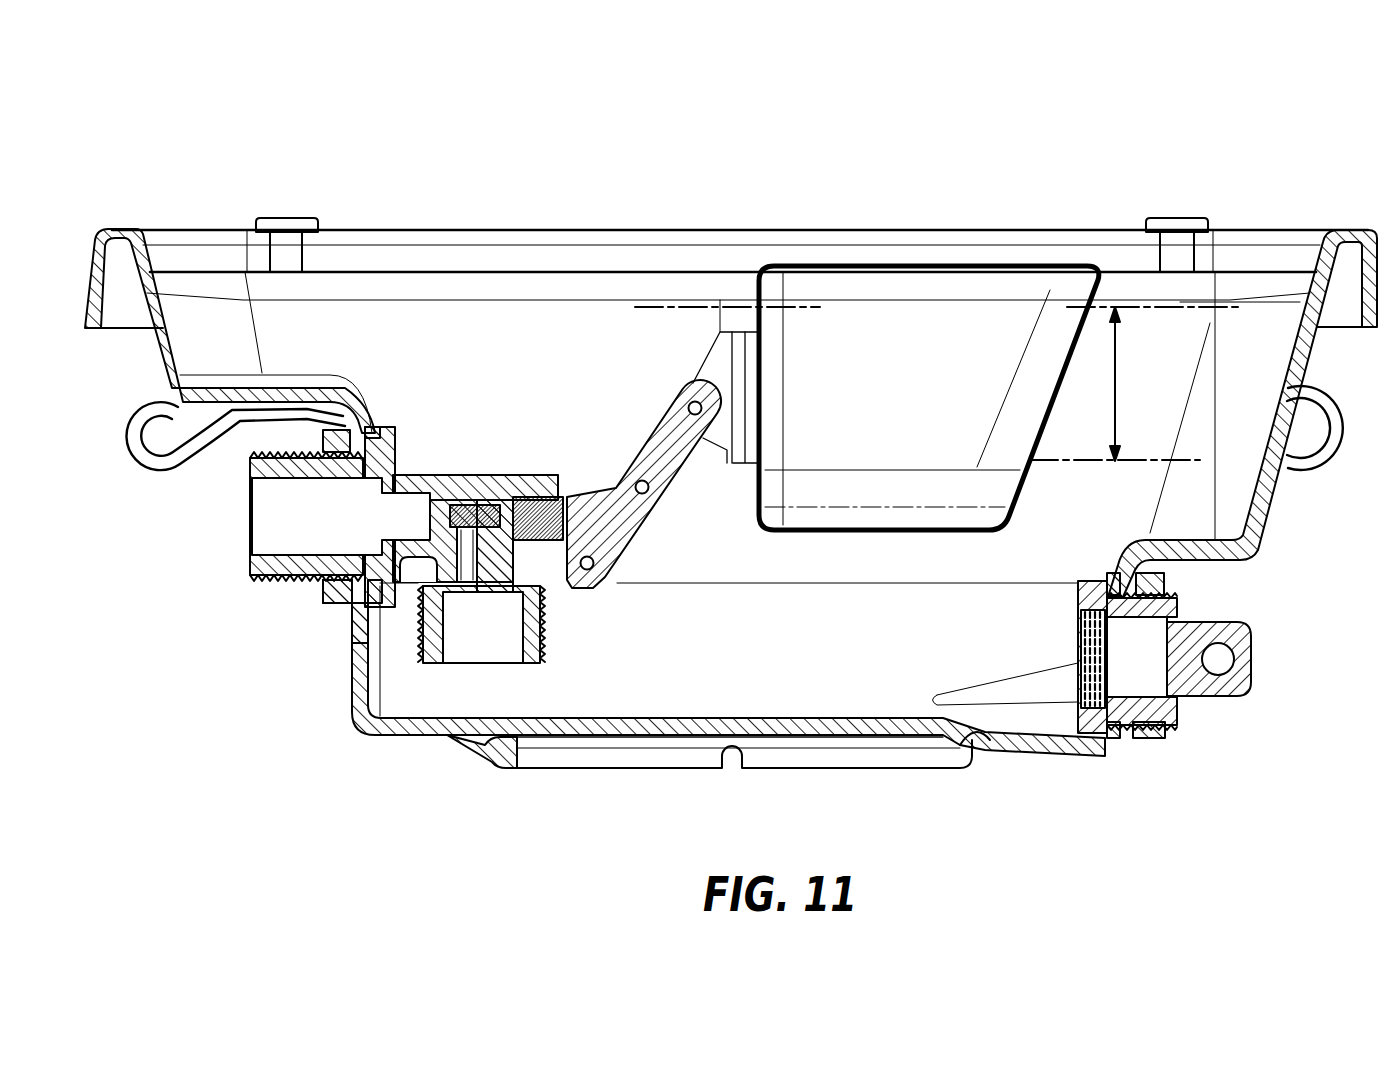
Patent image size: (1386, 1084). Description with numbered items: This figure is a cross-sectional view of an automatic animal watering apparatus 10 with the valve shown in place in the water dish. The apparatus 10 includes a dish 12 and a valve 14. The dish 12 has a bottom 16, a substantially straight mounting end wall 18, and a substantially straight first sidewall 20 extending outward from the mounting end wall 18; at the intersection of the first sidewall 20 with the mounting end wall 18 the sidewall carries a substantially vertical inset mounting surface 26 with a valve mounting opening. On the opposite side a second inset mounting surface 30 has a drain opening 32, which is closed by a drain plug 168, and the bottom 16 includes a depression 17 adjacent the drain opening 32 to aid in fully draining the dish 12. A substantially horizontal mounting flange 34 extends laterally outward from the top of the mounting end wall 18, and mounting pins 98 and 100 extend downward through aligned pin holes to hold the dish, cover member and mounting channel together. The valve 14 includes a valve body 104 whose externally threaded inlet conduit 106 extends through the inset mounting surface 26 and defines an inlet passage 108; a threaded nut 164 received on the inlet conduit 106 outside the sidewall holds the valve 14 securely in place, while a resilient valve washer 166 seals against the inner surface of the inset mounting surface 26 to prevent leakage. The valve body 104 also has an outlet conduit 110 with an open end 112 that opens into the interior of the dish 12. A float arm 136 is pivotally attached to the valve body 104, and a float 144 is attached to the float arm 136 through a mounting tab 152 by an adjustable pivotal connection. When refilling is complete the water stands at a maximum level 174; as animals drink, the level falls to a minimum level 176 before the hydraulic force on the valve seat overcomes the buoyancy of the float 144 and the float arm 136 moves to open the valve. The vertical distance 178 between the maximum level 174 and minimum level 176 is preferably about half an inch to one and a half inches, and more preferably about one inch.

The automatic animal watering apparatus 10 is at (1094, 178).
The dish 12 is at (554, 199).
The valve 14 is at (486, 449).
The bottom 16 is at (450, 729).
The depression 17 is at (1057, 715).
The mounting end wall 18 is at (410, 340).
The first sidewall 20 is at (355, 670).
The inset mounting surface 26 is at (714, 591).
The second inset mounting surface 30 is at (1128, 730).
The drain opening 32 is at (1176, 616).
The mounting flange 34 is at (670, 272).
The mounting pin 98 is at (1176, 246).
The mounting pin 100 is at (287, 245).
The valve body 104 is at (443, 518).
The inlet conduit 106 is at (290, 466).
The inlet passage 108 is at (300, 552).
The outlet conduit 110 is at (541, 596).
The open end 112 is at (514, 664).
The float arm 136 is at (631, 520).
The float 144 is at (948, 535).
The mounting tab 152 is at (725, 443).
The threaded nut 164 is at (328, 590).
The valve washer 166 is at (362, 628).
The drain plug 168 is at (1211, 688).
The maximum water level 174 is at (1230, 302).
The minimum water level 176 is at (1160, 460).
The vertical distance 178 is at (1113, 364).